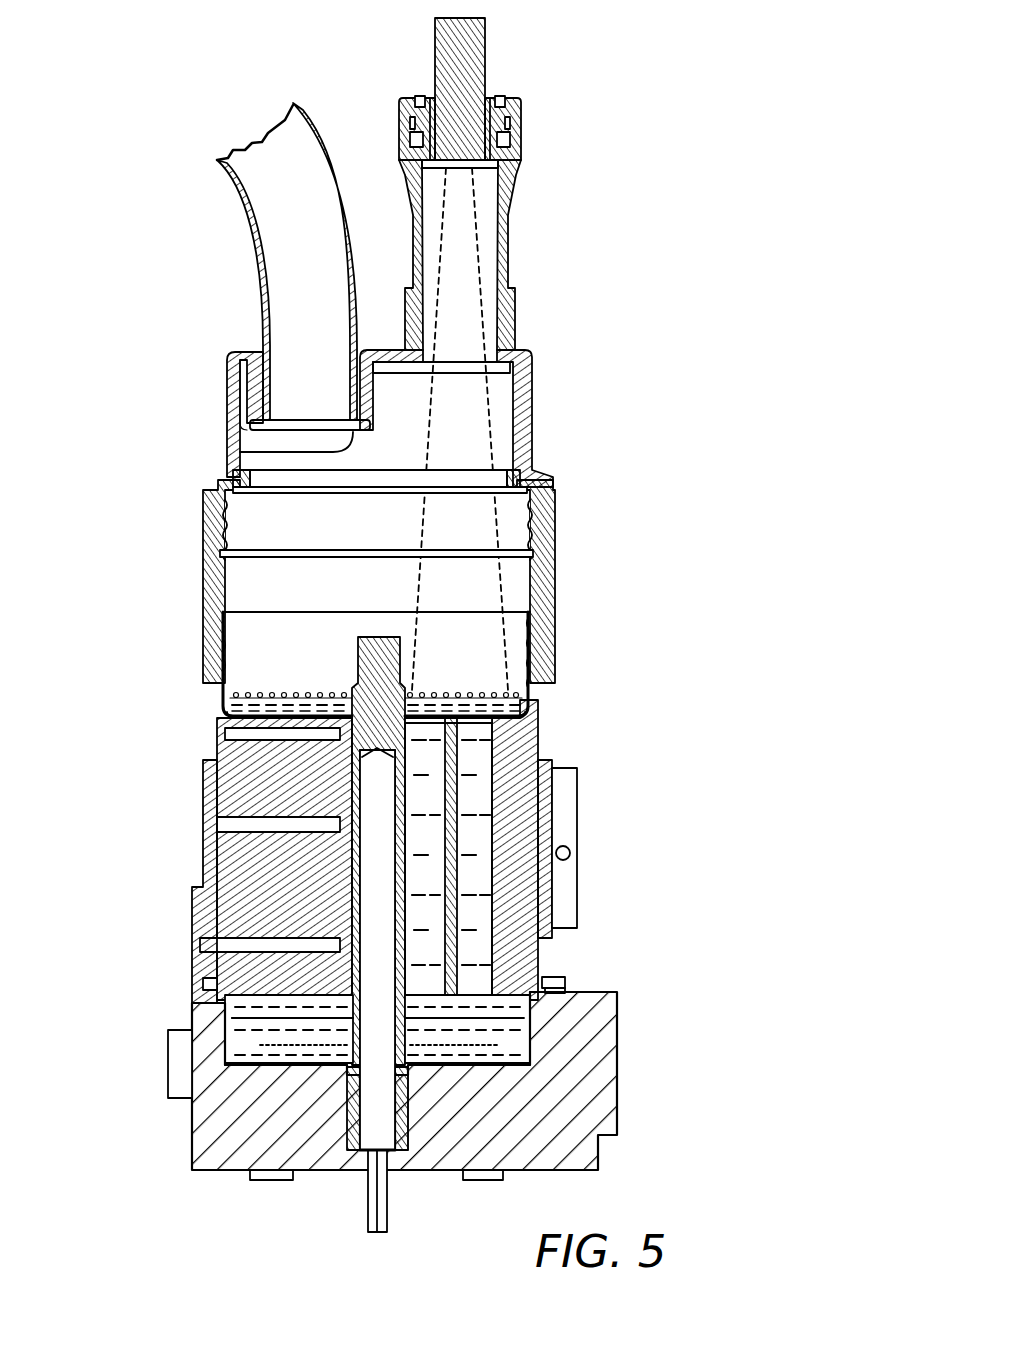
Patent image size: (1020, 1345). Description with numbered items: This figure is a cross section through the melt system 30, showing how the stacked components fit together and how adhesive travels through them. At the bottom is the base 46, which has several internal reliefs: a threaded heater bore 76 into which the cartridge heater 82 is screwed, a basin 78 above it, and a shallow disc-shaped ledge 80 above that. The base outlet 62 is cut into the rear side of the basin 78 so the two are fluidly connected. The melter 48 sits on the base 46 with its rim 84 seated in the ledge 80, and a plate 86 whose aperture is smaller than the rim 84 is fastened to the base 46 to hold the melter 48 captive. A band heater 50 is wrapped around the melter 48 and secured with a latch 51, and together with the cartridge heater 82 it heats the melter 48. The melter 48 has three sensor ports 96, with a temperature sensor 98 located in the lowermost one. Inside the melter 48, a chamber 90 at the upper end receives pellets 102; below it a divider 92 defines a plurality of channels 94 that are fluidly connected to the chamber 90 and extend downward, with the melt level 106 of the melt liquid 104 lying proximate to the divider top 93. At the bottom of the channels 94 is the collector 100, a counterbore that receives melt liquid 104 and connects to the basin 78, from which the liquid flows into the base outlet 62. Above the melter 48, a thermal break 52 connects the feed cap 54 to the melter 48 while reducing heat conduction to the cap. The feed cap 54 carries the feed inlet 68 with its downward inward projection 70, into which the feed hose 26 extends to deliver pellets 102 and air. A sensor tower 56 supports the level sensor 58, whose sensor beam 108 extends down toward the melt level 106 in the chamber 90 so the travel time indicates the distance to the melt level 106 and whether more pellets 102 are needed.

The feed hose 26 is at (250, 224).
The melt system 30 is at (672, 148).
The base 46 is at (188, 1112).
The melter 48 is at (214, 750).
The band heater 50 is at (238, 832).
The latch 51 is at (570, 852).
The thermal break 52 is at (203, 537).
The feed cap 54 is at (226, 350).
The sensor tower 56 is at (520, 190).
The level sensor 58 is at (487, 45).
The base outlet 62 is at (450, 1060).
The feed inlet 68 is at (262, 342).
The inward projection 70 is at (243, 420).
The heater bore 76 is at (365, 1152).
The basin 78 is at (245, 1075).
The ledge 80 is at (540, 553).
The cartridge heater 82 is at (252, 1040).
The rim 84 is at (600, 992).
The plate 86 is at (552, 977).
The chamber 90 is at (255, 633).
The divider 92 is at (505, 718).
The divider top 93 is at (225, 670).
The channels 94 is at (440, 815).
The sensor ports 96 is at (233, 737).
The temperature sensor 98 is at (215, 985).
The collector 100 is at (247, 1022).
The pellets 102 is at (472, 692).
The melt liquid 104 is at (494, 778).
The melt level 106 is at (250, 708).
The sensor beam 108 is at (495, 425).